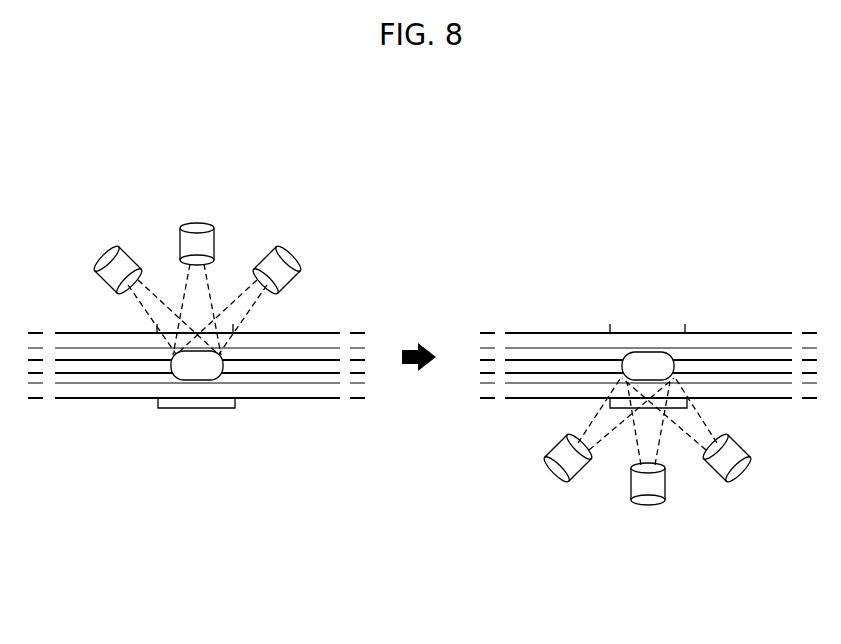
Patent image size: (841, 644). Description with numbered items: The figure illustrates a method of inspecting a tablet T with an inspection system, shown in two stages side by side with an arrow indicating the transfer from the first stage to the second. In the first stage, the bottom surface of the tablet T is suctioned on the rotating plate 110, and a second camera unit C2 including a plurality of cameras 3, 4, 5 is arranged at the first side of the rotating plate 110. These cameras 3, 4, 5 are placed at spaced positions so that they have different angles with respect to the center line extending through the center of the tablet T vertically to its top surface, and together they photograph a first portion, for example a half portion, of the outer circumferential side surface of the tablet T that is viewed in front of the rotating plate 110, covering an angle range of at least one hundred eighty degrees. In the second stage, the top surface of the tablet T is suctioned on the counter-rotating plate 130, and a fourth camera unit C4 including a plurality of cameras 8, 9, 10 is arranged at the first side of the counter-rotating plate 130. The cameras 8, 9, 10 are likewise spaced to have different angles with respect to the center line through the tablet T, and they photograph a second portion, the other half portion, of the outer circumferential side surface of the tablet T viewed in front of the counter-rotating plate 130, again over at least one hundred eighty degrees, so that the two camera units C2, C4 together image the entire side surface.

The camera 3 is at (117, 264).
The camera 4 is at (197, 247).
The camera 5 is at (279, 264).
The second camera unit C2 is at (115, 172).
The rotating plate 110 is at (98, 388).
The tablet T is at (193, 368).
The counter-rotating plate 130 is at (538, 345).
The camera 8 is at (573, 470).
The camera 9 is at (648, 488).
The camera 10 is at (730, 470).
The fourth camera unit C4 is at (577, 563).